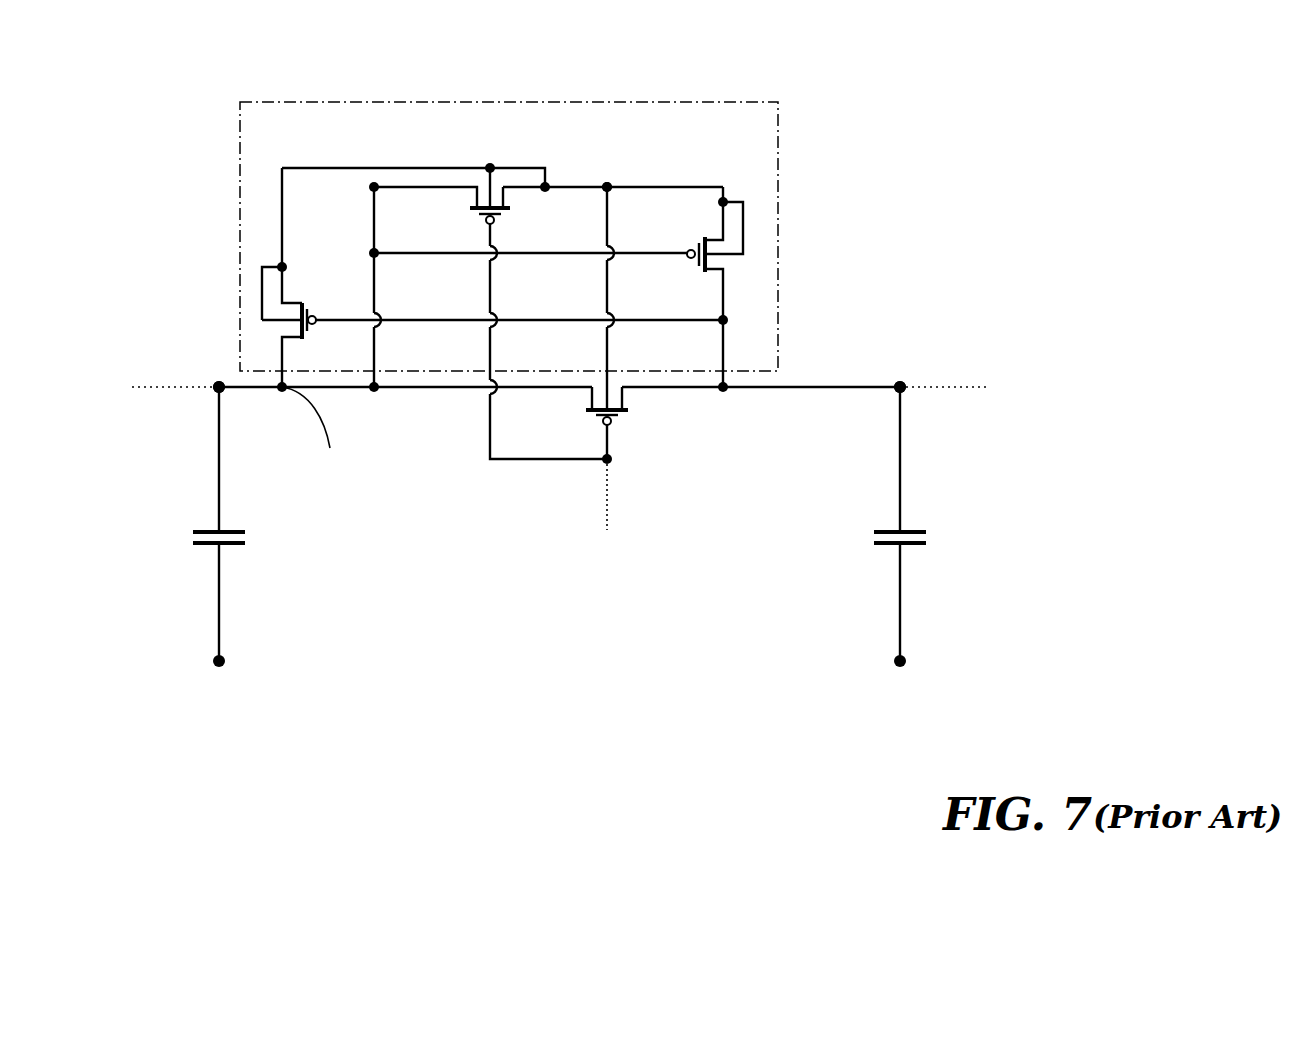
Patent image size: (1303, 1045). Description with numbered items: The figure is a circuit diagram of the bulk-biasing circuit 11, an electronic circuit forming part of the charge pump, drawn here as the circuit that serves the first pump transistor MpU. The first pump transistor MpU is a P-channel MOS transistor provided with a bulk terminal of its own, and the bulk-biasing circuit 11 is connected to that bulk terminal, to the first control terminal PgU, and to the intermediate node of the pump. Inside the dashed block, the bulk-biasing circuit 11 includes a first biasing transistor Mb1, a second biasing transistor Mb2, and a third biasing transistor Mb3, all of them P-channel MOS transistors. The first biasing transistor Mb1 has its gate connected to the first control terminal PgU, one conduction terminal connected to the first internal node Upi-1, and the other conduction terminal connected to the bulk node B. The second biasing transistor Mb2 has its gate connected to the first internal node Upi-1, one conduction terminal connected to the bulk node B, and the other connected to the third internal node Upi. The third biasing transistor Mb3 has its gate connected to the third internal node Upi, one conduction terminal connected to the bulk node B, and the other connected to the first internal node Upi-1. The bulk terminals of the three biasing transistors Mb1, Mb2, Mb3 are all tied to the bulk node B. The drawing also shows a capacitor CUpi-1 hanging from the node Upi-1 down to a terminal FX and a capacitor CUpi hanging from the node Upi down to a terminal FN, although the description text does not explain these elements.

The bulk-biasing circuit 11 is at (707, 102).
The bulk node B is at (607, 187).
The first biasing transistor Mb1 is at (538, 313).
The second biasing transistor Mb2 is at (698, 287).
The third biasing transistor Mb3 is at (310, 277).
The first pump transistor MpU is at (638, 423).
The first control terminal PgU is at (607, 459).
The first internal node Upi-1 is at (219, 387).
The third internal node Upi is at (900, 387).
The pull-up node capacitor CUp(i-1) CUpi-1 is at (258, 524).
The pull-up node capacitor CUp(i) CUpi is at (935, 524).
The terminal FX is at (218, 681).
The terminal FN is at (899, 681).